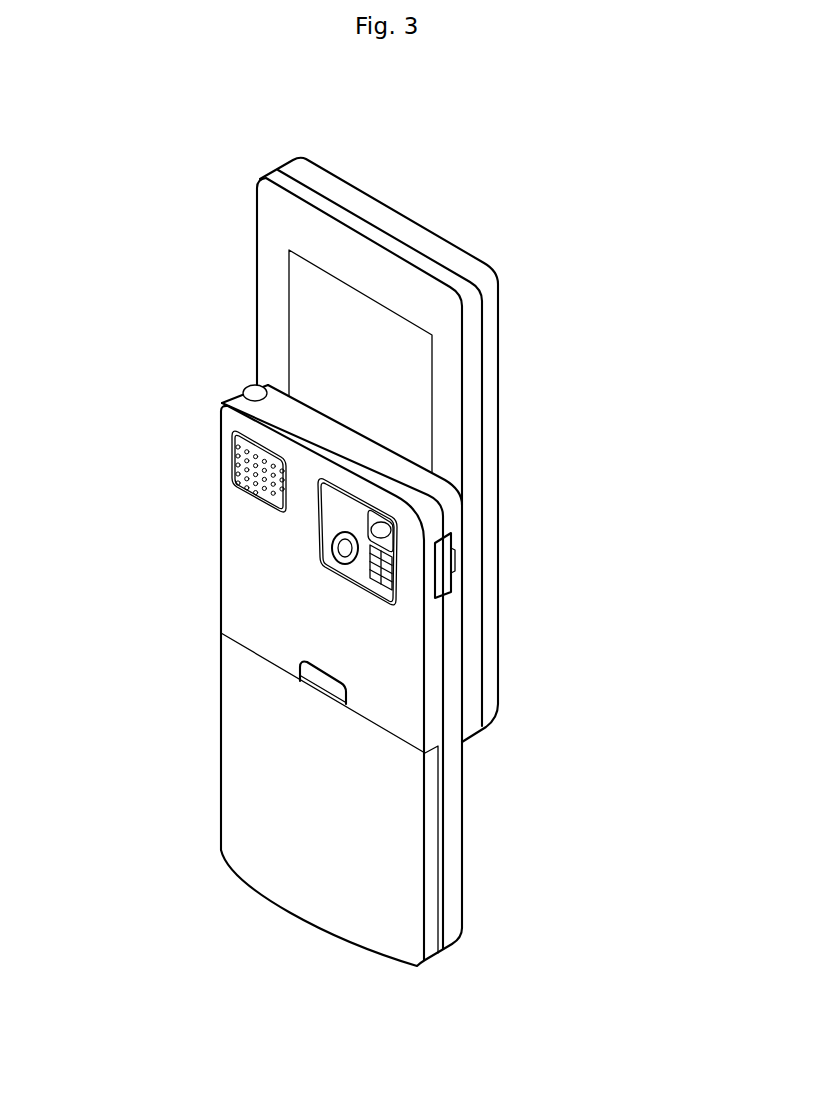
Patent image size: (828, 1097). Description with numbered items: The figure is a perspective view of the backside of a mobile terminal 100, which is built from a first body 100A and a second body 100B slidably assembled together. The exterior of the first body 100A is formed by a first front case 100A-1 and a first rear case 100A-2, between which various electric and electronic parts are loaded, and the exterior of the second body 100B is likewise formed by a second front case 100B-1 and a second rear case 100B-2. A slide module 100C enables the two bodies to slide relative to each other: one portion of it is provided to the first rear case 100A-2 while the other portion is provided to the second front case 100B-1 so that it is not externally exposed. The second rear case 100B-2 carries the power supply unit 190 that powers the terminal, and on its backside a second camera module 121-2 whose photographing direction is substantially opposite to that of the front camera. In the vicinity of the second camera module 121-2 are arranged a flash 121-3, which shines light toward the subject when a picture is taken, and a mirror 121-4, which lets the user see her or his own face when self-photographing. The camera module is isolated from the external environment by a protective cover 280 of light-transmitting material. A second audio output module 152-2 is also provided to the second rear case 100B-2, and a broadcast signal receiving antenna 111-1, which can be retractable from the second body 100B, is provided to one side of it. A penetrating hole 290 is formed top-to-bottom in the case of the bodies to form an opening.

The mobile terminal 100 is at (484, 188).
The first body 100A is at (222, 281).
The first front case 100A-1 is at (291, 162).
The first rear case 100A-2 is at (282, 176).
The second body 100B is at (195, 553).
The second front case 100B-1 is at (453, 767).
The second rear case 100B-2 is at (433, 715).
The slide module 100C is at (286, 347).
The broadcast signal receiving antenna 111-1 is at (240, 386).
The second camera module 121-2 is at (350, 521).
The flash 121-3 is at (397, 595).
The mirror 121-4 is at (384, 529).
The second audio output module 152-2 is at (236, 463).
The power supply unit 190 is at (232, 712).
The protective cover 280 is at (345, 567).
The penetrating hole 290 is at (363, 543).